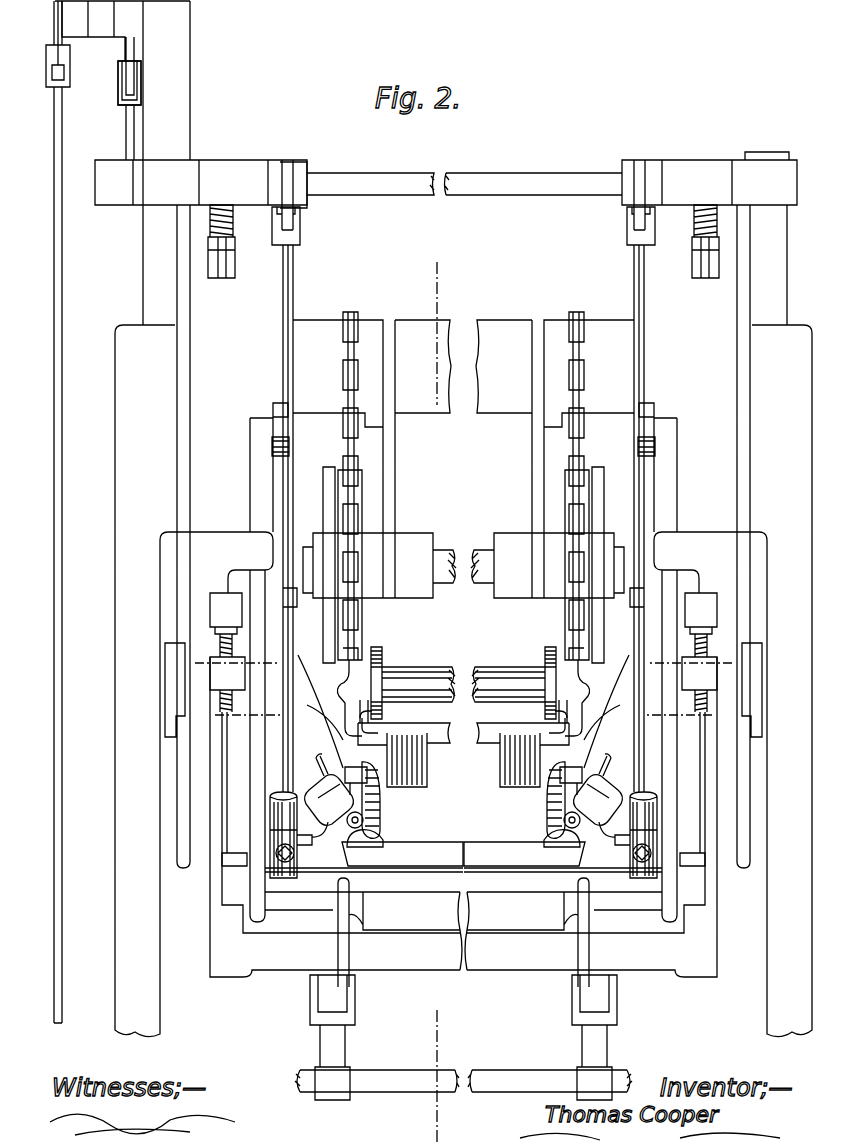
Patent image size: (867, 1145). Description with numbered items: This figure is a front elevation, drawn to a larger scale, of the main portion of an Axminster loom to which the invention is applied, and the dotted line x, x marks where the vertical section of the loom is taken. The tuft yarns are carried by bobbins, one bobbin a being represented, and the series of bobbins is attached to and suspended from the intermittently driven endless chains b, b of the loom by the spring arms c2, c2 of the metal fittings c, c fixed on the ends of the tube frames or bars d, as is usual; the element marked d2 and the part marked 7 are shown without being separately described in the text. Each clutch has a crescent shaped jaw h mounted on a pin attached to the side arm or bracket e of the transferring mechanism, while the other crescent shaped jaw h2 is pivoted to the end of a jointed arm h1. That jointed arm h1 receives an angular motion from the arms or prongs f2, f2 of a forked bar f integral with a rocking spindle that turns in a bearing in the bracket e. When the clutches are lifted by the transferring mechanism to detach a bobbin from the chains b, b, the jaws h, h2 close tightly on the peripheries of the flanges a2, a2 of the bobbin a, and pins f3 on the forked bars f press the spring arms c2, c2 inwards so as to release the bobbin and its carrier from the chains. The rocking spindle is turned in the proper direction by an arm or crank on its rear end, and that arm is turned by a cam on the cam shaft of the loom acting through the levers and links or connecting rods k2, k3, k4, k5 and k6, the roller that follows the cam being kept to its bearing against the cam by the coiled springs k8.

The connecting rod k2 is at (60, 272).
The connecting rod k3 is at (59, 30).
The connecting rod k4 is at (134, 80).
The connecting rod k5 is at (126, 134).
The connecting rod k6 is at (645, 291).
The coiled spring k8 is at (232, 215).
The lug 7 is at (290, 228).
The section line x is at (433, 691).
The bobbin a is at (481, 668).
The bobbin flange a2 is at (378, 654).
The endless chain b is at (345, 388).
The metal fitting c is at (352, 681).
The spring arm c2 is at (368, 668).
The tube frame d is at (472, 742).
The fluted block d2 is at (418, 787).
The side arm or bracket e is at (463, 711).
The forked bar f is at (348, 842).
The prong f2 is at (312, 790).
The pin f3 is at (322, 762).
The crescent shaped jaw h is at (363, 762).
The jointed arm h1 is at (344, 810).
The crescent shaped jaw h2 is at (380, 828).